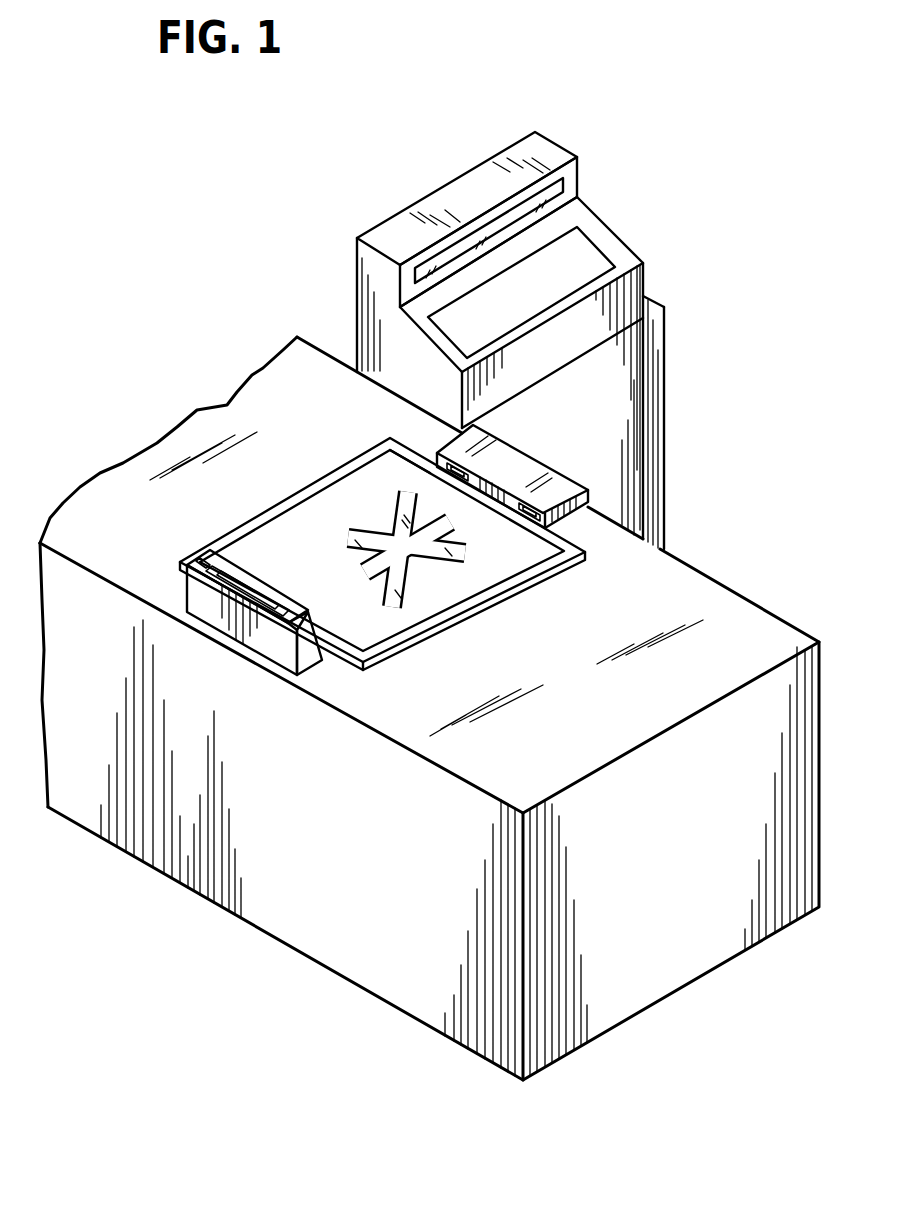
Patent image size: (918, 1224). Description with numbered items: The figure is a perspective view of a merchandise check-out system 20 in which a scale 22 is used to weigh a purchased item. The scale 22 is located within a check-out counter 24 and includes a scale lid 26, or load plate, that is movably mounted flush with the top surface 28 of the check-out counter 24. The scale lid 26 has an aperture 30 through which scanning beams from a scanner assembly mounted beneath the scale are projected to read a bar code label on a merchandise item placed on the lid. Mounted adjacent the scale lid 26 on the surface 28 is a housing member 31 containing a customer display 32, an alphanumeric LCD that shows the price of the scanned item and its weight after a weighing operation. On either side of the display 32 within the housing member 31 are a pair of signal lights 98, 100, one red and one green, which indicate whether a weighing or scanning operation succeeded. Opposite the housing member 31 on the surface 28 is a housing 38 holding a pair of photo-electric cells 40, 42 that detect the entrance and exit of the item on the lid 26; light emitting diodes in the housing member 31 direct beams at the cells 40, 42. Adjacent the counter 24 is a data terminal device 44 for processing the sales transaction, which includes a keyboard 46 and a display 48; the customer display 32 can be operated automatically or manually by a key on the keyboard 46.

The merchandise check-out system 20 is at (310, 298).
The scale 22 is at (332, 515).
The check-out counter 24 is at (645, 982).
The scale lid 26 is at (368, 637).
The top surface 28 is at (233, 422).
The aperture 30 is at (407, 585).
The housing member 31 is at (198, 597).
The customer display 32 is at (238, 592).
The housing 38 is at (510, 463).
The photo-electric cell 40 is at (382, 467).
The photo-electric cell 42 is at (517, 530).
The data terminal device 44 is at (460, 202).
The keyboard 46 is at (603, 253).
The display 48 is at (557, 192).
The signal light 98 is at (207, 560).
The signal light 100 is at (292, 617).